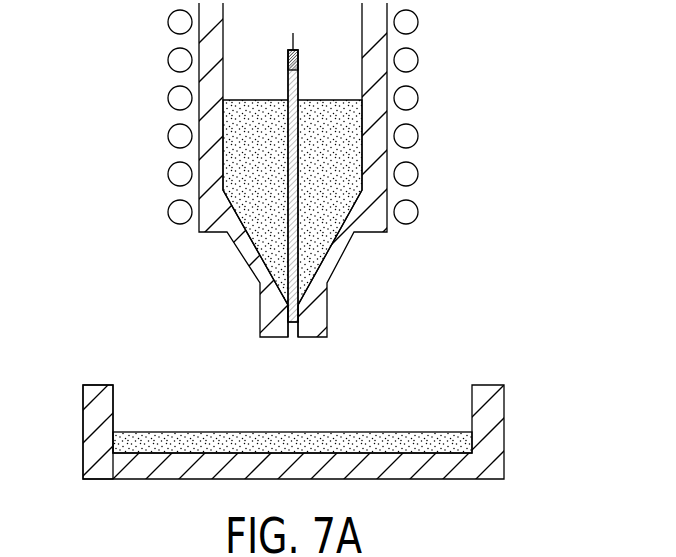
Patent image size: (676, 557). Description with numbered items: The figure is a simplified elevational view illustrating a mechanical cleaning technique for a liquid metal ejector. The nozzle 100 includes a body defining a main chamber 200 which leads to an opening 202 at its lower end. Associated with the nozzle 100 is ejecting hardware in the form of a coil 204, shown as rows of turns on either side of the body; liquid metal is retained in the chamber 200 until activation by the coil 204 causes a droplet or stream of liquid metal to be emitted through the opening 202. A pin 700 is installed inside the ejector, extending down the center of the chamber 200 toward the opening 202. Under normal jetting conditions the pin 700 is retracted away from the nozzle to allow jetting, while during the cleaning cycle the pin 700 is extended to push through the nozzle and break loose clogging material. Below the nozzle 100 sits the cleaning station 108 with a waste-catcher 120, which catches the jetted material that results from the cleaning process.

The nozzle 100 is at (431, 77).
The cleaning station 108 is at (531, 428).
The waste-catcher 120 is at (90, 433).
The main chamber 200 is at (183, 0).
The opening 202 is at (292, 338).
The coil 204 is at (418, 136).
The pin 700 is at (292, 260).